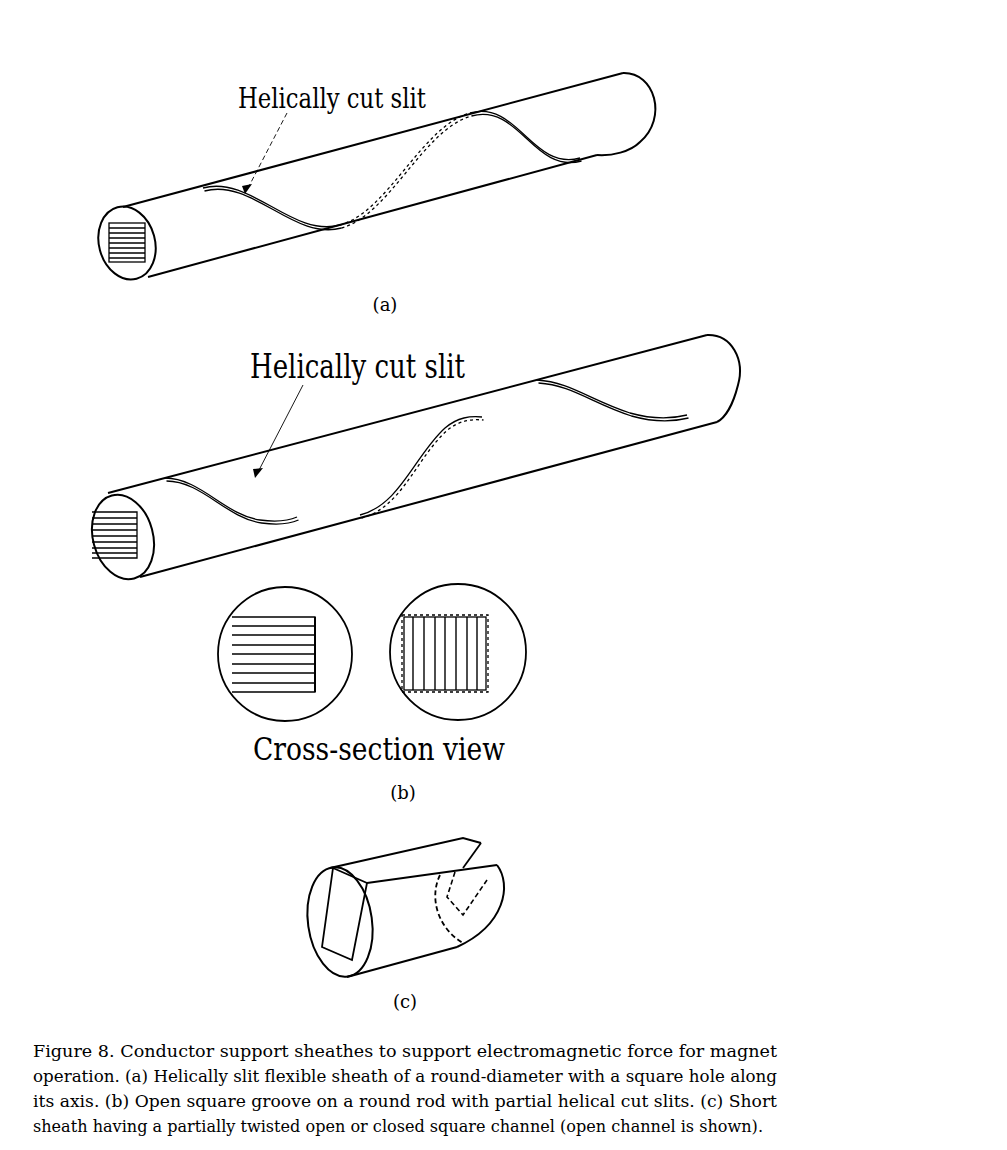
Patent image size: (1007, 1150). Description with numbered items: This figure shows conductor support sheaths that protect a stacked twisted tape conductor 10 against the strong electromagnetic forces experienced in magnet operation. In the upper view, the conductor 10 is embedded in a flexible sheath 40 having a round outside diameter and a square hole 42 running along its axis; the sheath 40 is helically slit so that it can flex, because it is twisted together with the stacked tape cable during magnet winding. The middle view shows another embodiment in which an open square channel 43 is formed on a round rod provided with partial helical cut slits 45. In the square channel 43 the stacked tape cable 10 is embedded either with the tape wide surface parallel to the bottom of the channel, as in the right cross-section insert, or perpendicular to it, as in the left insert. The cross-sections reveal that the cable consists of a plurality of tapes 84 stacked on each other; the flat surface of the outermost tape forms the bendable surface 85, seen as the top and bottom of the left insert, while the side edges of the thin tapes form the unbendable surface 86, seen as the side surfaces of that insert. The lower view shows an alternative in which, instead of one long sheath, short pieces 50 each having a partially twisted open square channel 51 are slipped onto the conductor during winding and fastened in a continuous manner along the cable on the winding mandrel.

The conductor 10 is at (103, 263).
The flexible sheath 40 is at (605, 112).
The square hole 42 is at (137, 233).
The open square channel 43 is at (92, 543).
The partial helical cut slits 45 is at (590, 403).
The short pieces 50 is at (548, 888).
The partially twisted square channel 51 is at (324, 913).
The tapes 84 is at (452, 627).
The bendable surface 85 is at (273, 612).
The unbendable surface 86 is at (320, 647).